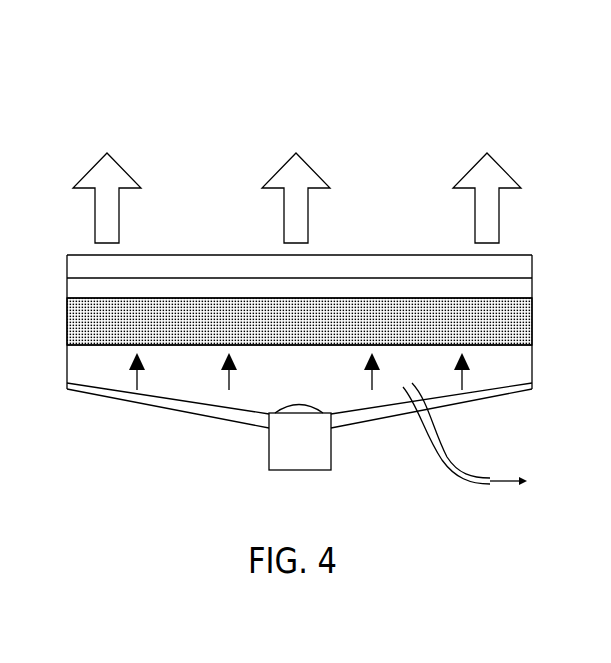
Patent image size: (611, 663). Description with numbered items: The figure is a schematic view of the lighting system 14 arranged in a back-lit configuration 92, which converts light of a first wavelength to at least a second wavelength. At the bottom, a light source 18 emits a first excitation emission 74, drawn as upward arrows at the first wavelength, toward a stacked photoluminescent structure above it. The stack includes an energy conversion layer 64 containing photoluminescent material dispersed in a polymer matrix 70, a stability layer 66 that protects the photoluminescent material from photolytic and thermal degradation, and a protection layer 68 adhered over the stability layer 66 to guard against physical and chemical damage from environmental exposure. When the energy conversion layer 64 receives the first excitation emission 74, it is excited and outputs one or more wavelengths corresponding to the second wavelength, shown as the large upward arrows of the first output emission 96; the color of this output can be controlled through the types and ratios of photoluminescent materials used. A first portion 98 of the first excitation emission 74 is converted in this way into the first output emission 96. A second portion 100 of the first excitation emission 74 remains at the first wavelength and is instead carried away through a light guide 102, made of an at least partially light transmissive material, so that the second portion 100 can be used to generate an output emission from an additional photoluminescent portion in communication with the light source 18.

The back-lit configuration 92 is at (449, 104).
The lighting system 14 is at (297, 296).
The first output emission 96 is at (102, 218).
The protection layer 68 is at (68, 263).
The stability layer 66 is at (75, 290).
The energy conversion layer 64 is at (70, 313).
The first portion of the first excitation emission 98 is at (66, 323).
The polymer matrix 70 is at (540, 315).
The first excitation emission 74 is at (135, 380).
The light source 18 is at (311, 450).
The light guide 102 is at (440, 463).
The second portion of the first excitation emission 100 is at (503, 487).